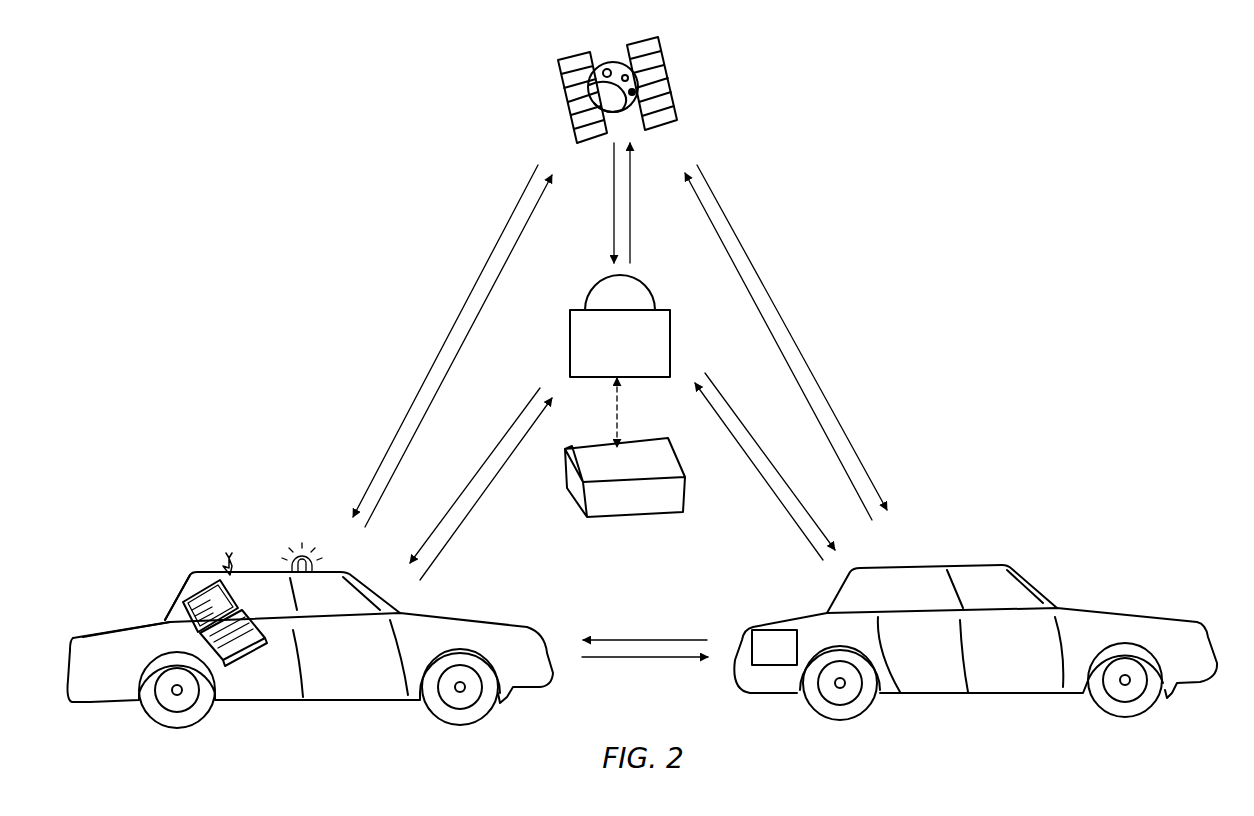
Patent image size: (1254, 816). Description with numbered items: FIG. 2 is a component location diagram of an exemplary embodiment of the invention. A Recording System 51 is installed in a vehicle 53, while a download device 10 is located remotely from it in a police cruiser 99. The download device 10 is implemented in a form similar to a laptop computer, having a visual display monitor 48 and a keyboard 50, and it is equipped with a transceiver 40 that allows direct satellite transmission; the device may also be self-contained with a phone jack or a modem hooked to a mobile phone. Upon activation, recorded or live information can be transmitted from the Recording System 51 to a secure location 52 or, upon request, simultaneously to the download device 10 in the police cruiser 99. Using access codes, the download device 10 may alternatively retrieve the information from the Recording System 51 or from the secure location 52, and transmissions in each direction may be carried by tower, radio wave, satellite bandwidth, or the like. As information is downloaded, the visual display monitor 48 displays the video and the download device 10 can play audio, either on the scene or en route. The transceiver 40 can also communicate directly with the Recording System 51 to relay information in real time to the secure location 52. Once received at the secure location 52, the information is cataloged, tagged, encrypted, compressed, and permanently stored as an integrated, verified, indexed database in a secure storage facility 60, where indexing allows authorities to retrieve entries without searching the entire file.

The download device 10 is at (243, 597).
The transceiver 40 is at (225, 565).
The visual display monitor 48 is at (165, 617).
The keyboard 50 is at (145, 653).
The police cruiser 99 is at (433, 613).
The secure location 52 is at (620, 326).
The secure storage facility 60 is at (625, 477).
The vehicle 53 is at (920, 567).
The Recording System 51 is at (774, 647).